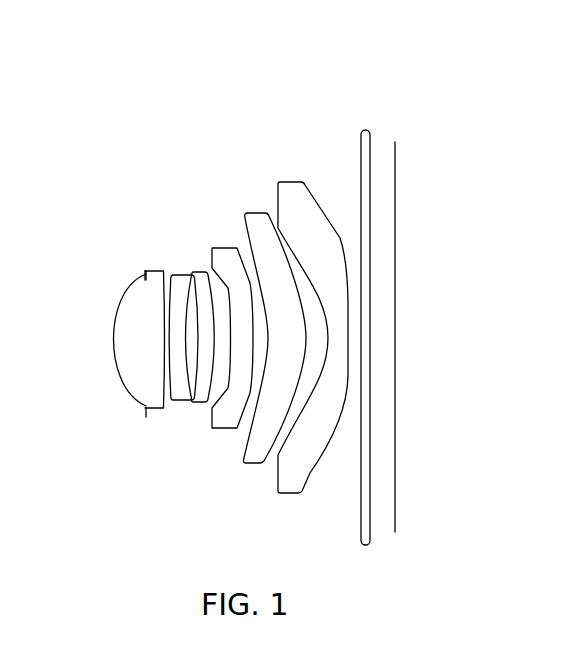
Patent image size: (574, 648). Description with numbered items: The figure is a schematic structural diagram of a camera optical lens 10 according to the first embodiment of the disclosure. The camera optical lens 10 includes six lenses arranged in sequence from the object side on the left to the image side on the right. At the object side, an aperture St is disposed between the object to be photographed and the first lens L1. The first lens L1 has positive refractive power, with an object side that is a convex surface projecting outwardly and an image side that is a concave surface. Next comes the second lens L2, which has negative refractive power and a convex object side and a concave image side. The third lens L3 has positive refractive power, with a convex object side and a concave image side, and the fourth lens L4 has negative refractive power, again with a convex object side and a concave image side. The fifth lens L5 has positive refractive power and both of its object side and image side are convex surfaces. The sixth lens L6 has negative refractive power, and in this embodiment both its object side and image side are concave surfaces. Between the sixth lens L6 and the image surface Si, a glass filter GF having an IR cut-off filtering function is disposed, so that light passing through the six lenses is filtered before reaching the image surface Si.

The camera optical lens 10 is at (266, 34).
The first lens L1 is at (139, 329).
The second lens L2 is at (181, 324).
The third lens L3 is at (200, 325).
The fourth lens L4 is at (232, 328).
The fifth lens L5 is at (274, 325).
The sixth lens L6 is at (313, 323).
The glass filter GF is at (357, 321).
The image surface Si is at (395, 322).
The aperture St is at (139, 261).